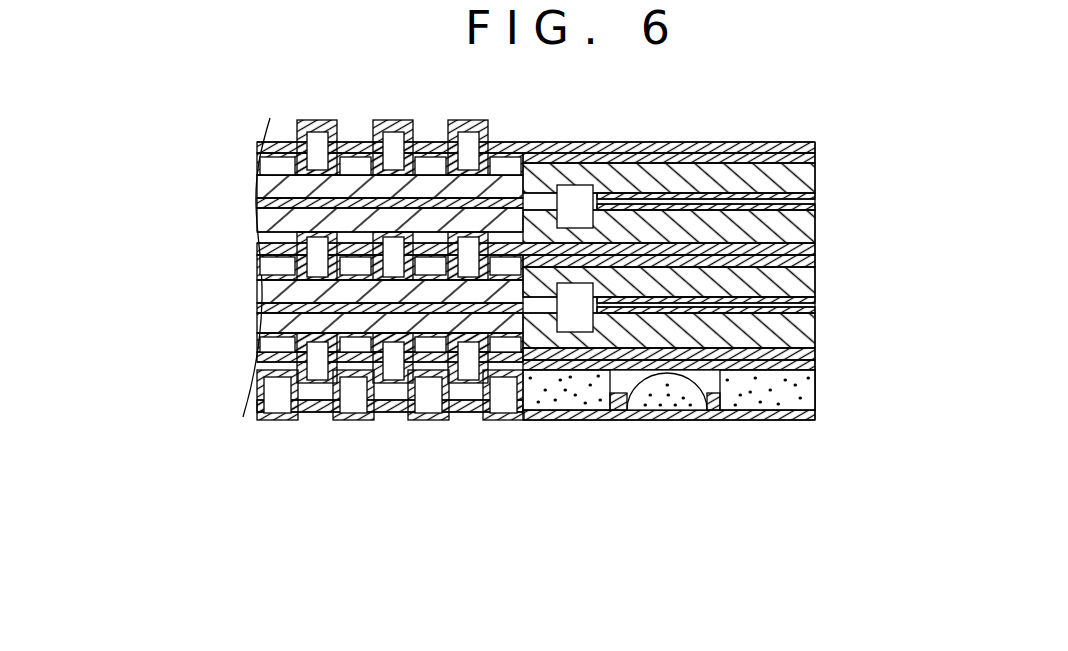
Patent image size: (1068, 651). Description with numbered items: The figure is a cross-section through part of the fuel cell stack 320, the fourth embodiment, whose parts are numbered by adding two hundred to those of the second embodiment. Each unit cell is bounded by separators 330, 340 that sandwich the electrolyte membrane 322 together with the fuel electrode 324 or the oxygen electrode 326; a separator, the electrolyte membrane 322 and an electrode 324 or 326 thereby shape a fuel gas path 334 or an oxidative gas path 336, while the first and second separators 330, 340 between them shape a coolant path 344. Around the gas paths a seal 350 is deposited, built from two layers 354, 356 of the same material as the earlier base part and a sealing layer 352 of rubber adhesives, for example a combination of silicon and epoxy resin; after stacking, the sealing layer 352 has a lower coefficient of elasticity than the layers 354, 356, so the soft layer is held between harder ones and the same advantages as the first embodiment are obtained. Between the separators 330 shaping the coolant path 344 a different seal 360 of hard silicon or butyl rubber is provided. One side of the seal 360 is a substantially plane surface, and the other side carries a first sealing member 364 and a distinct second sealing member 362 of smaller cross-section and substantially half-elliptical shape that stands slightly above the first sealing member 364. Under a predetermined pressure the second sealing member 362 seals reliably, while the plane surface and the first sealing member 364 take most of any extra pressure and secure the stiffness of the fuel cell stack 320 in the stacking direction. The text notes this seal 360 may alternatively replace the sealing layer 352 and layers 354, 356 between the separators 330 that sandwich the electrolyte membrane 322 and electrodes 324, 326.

The fuel cell stack 320 is at (940, 100).
The electrolyte membrane 322 is at (600, 162).
The fuel electrode 324 is at (578, 205).
The oxygen electrode 326 is at (503, 190).
The separator 330 is at (817, 145).
The fuel gas path 334 is at (427, 238).
The oxidative gas path 336 is at (427, 285).
The second separator 340 is at (817, 157).
The coolant path 344 is at (427, 405).
The seal 350 is at (930, 153).
The sealing layer 352 is at (817, 202).
The layer 354 is at (817, 177).
The layer 356 is at (817, 240).
The seal 360 is at (633, 461).
The second sealing member 362 is at (655, 430).
The first sealing member 364 is at (540, 387).